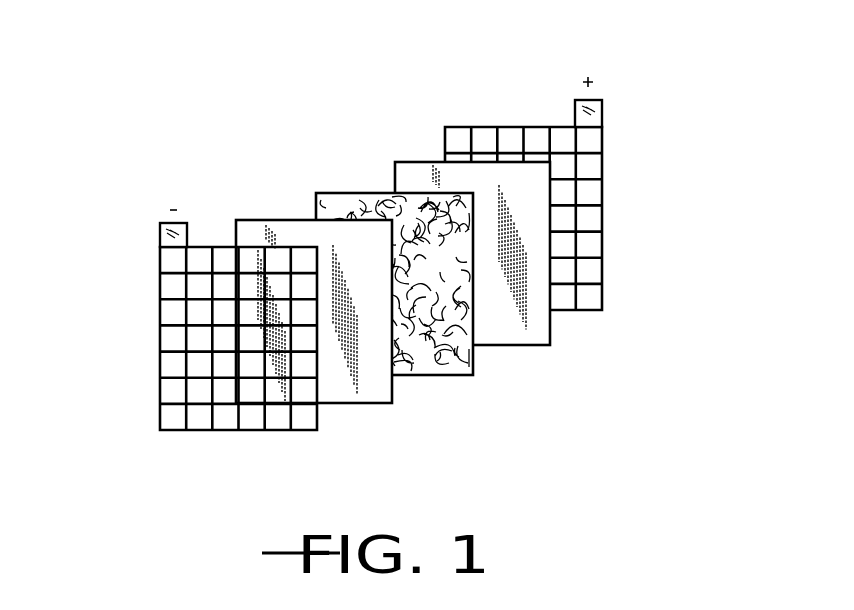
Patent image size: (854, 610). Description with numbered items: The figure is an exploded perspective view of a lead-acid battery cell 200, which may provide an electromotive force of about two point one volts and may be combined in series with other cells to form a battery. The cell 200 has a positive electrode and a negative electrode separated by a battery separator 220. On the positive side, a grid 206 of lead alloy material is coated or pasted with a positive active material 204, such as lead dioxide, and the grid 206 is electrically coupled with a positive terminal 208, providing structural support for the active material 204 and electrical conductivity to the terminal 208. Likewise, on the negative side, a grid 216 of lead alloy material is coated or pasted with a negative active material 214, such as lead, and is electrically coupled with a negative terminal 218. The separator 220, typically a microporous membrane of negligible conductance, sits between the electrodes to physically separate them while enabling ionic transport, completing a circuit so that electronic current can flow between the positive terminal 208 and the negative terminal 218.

The lead-acid battery cell 200 is at (402, 282).
The positive active material 204 is at (550, 336).
The grid 206 is at (603, 268).
The positive terminal 208 is at (572, 112).
The negative active material 214 is at (352, 403).
The grid 216 is at (215, 431).
The negative terminal 218 is at (159, 238).
The battery separator 220 is at (435, 376).